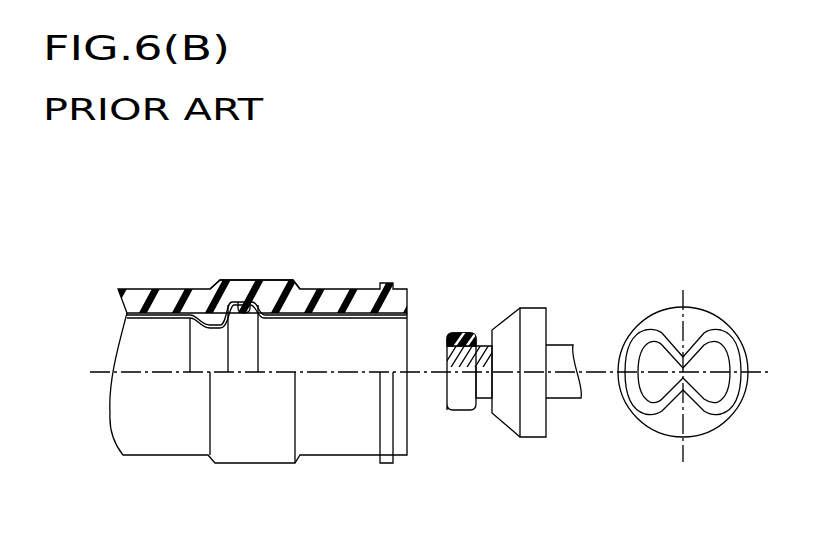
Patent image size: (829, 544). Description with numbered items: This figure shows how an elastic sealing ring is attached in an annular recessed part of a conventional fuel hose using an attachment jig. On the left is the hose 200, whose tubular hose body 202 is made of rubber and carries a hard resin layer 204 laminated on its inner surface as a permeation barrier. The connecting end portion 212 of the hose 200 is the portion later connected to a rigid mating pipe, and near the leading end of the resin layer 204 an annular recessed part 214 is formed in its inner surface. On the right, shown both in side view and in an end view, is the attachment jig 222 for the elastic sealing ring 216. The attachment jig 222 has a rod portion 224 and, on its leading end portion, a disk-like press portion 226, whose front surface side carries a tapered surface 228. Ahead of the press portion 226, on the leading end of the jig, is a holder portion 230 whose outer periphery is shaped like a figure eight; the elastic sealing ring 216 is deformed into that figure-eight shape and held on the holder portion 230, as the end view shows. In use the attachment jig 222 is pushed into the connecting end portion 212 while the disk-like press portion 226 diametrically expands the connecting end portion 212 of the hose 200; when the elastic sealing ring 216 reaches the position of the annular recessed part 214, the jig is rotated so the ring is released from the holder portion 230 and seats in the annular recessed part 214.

The hose 200 is at (267, 316).
The tubular hose body 202 is at (285, 272).
The resin layer 204 is at (152, 293).
The connecting end portion 212 is at (357, 293).
The annular recessed part 214 is at (237, 295).
The elastic sealing ring 216 is at (465, 333).
The attachment jig 222 is at (619, 348).
The rod portion 224 is at (565, 400).
The press portion 226 is at (522, 304).
The tapered surface 228 is at (508, 428).
The holder portion 230 is at (485, 398).